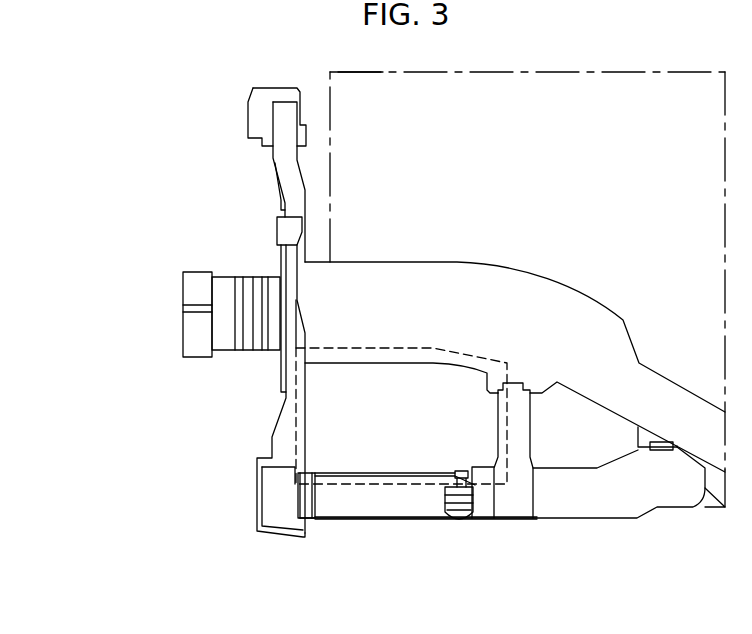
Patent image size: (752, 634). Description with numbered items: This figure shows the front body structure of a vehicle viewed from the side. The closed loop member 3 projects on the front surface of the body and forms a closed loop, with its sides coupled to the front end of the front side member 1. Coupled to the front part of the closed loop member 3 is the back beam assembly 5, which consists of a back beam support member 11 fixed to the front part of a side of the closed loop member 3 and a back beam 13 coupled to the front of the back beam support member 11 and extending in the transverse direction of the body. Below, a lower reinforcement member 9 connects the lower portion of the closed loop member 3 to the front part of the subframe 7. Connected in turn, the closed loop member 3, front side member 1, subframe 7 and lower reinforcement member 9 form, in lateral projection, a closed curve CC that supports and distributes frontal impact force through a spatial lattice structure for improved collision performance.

The front side member 1 is at (347, 300).
The closed loop member 3 is at (283, 120).
The back beam assembly 5 is at (237, 403).
The subframe 7 is at (597, 503).
The lower reinforcement member 9 is at (393, 500).
The back beam support member 11 is at (280, 357).
The back beam 13 is at (193, 331).
The closed curve CC is at (335, 485).